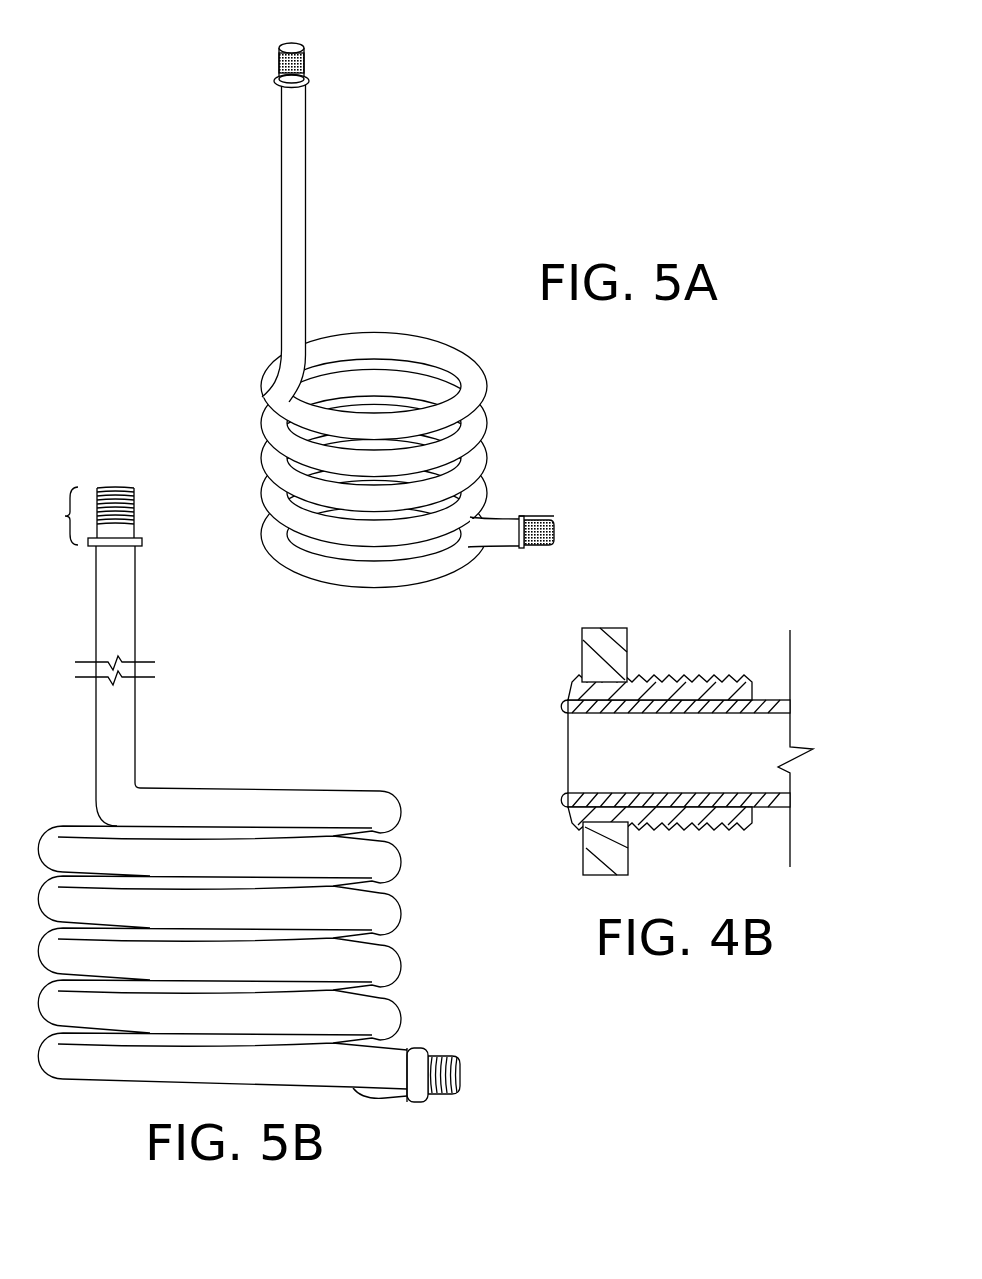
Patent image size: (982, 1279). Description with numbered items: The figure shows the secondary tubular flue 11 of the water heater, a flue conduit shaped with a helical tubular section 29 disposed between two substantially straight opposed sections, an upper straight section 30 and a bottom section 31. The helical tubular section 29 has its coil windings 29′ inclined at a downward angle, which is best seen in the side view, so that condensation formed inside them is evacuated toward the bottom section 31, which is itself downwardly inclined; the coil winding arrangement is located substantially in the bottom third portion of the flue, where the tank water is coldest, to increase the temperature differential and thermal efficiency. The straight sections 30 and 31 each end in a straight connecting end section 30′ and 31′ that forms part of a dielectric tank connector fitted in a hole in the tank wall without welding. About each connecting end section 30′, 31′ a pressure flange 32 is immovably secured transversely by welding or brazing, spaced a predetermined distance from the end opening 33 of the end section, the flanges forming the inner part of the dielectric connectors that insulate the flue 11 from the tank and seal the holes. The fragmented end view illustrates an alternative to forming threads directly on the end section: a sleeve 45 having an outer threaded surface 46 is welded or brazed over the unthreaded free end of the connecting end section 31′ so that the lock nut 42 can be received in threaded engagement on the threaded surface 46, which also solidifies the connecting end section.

In FIG. 5A, the secondary tubular flue 11 is at (405, 200).
In FIG. 5B, the secondary tubular flue 11 is at (246, 660).
In FIG. 5B, the helical tubular section 29 is at (264, 785).
In FIG. 5A, the coil windings 29′ is at (387, 348).
In FIG. 5B, the coil windings 29′ is at (383, 958).
In FIG. 5A, the straight section 30 is at (281, 222).
In FIG. 5B, the straight section 30 is at (107, 718).
In FIG. 5A, the straight connecting end section 30′ is at (280, 72).
In FIG. 5A, the bottom section 31 is at (500, 520).
In FIG. 5A, the straight connecting end section 31′ is at (540, 548).
In FIG. 5B, the straight connecting end section 31′ is at (437, 1053).
In FIG. 4B, the straight connecting end section 31′ is at (767, 688).
In FIG. 5A, the pressure flange 32 is at (307, 85).
In FIG. 5B, the pressure flange 32 is at (100, 543).
In FIG. 5A, the end opening 33 is at (288, 46).
In FIG. 5B, the end opening 33 is at (103, 486).
In FIG. 4B, the wall flange 42 is at (607, 657).
In FIG. 4B, the sleeve 45 is at (695, 840).
In FIG. 4B, the outer threaded surface 46 is at (680, 688).